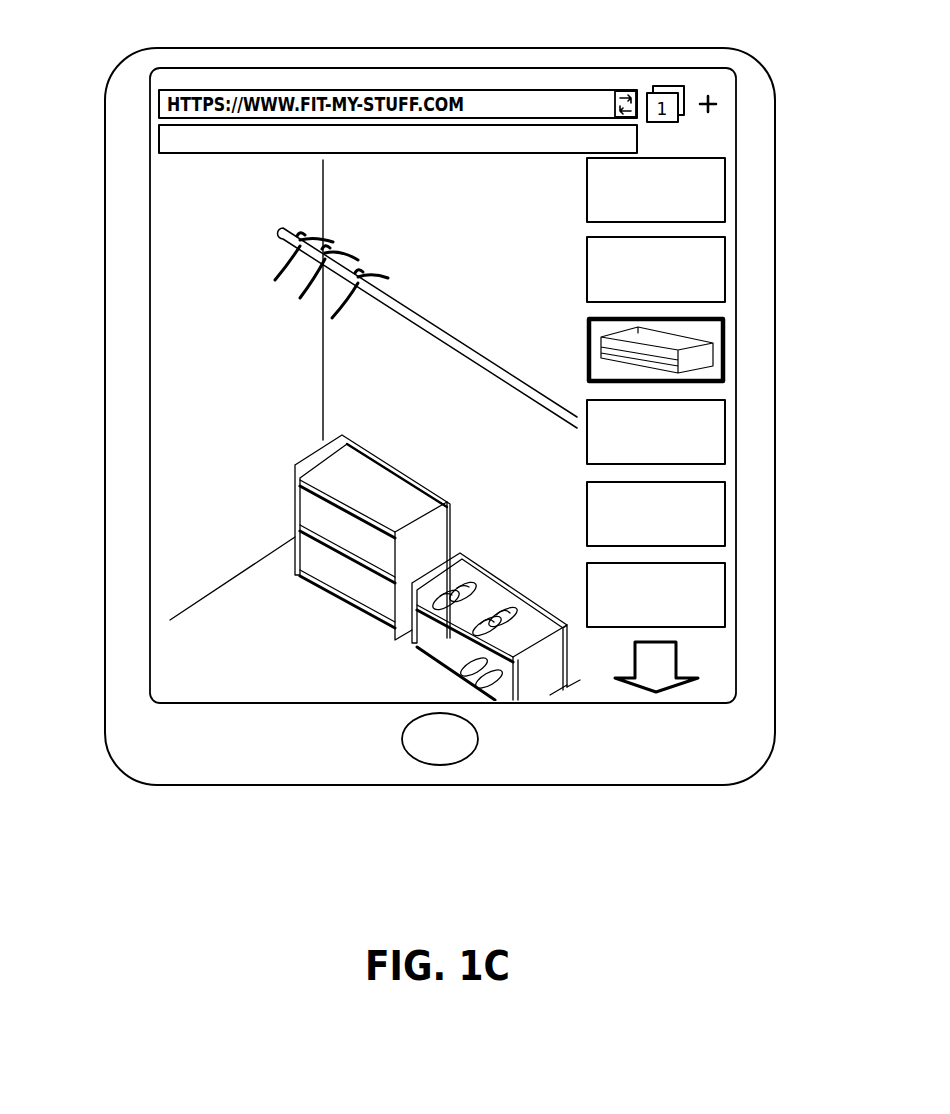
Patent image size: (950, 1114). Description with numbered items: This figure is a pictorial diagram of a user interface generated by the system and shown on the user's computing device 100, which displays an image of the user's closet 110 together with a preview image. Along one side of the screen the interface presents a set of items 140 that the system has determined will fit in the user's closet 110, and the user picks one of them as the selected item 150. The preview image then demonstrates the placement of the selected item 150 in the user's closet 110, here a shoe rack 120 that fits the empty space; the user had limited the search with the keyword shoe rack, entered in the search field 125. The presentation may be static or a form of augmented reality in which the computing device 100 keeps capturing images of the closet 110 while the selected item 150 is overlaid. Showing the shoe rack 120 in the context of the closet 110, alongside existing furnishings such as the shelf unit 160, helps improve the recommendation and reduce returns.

The computing device 100 is at (678, 48).
The closet 110 is at (737, 663).
The search field 125 is at (159, 140).
The set of items 140 is at (712, 141).
The selected item 150 is at (726, 345).
The shelf unit in room image 160 is at (413, 477).
The shoe rack 120 is at (495, 575).